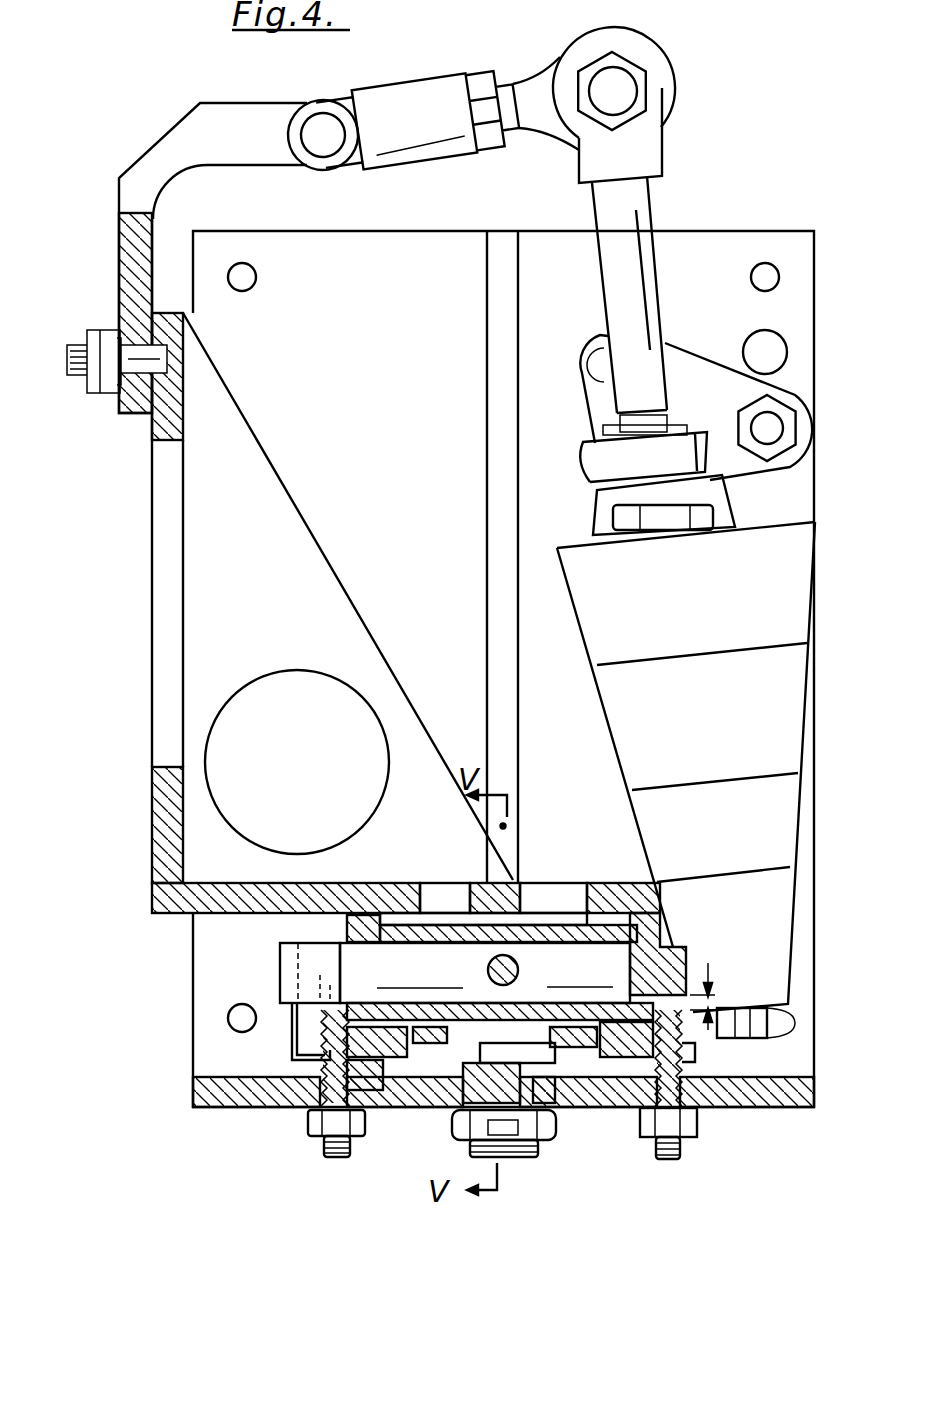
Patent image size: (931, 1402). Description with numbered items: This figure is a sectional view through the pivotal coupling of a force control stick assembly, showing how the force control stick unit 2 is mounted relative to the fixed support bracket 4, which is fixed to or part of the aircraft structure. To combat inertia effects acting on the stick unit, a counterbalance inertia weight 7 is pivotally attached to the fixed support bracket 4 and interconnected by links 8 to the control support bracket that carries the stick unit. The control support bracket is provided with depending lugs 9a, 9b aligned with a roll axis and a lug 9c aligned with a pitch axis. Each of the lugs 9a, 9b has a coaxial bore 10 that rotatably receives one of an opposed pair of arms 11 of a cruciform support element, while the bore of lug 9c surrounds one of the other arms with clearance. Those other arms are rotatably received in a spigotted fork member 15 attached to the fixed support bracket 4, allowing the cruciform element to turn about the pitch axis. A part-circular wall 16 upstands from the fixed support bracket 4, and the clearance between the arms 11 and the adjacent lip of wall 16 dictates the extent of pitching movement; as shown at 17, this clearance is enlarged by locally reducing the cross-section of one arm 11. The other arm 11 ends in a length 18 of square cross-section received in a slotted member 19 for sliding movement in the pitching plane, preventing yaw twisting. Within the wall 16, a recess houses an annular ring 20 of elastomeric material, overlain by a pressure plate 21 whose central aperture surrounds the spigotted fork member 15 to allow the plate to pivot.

The force control stick unit 2 is at (258, 448).
The fixed support bracket 4 is at (709, 235).
The counterbalance inertia weight 7 is at (767, 530).
The links 8 is at (417, 96).
The depending lug 9a is at (370, 913).
The depending lug 9b is at (630, 883).
The depending lug 9c is at (467, 920).
The coaxial bore 10 is at (357, 930).
The arm 11 is at (557, 983).
The spigotted fork member 15 is at (470, 1085).
The part-circular wall 16 is at (683, 1030).
The locally reduced cross-section 17 is at (675, 965).
The length of square cross-section 18 is at (307, 973).
The slotted member 19 is at (290, 1027).
The annular ring 20 is at (383, 1090).
The pressure plate 21 is at (762, 925).